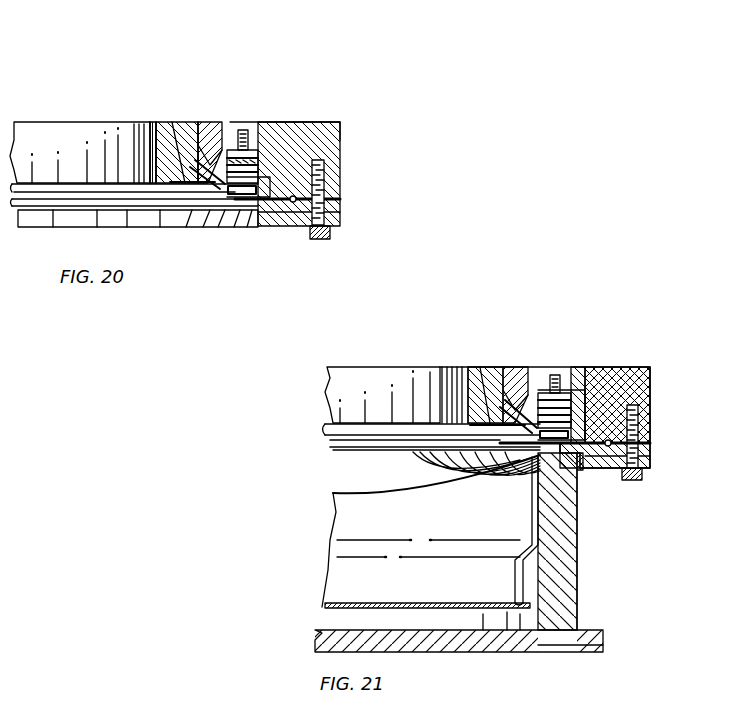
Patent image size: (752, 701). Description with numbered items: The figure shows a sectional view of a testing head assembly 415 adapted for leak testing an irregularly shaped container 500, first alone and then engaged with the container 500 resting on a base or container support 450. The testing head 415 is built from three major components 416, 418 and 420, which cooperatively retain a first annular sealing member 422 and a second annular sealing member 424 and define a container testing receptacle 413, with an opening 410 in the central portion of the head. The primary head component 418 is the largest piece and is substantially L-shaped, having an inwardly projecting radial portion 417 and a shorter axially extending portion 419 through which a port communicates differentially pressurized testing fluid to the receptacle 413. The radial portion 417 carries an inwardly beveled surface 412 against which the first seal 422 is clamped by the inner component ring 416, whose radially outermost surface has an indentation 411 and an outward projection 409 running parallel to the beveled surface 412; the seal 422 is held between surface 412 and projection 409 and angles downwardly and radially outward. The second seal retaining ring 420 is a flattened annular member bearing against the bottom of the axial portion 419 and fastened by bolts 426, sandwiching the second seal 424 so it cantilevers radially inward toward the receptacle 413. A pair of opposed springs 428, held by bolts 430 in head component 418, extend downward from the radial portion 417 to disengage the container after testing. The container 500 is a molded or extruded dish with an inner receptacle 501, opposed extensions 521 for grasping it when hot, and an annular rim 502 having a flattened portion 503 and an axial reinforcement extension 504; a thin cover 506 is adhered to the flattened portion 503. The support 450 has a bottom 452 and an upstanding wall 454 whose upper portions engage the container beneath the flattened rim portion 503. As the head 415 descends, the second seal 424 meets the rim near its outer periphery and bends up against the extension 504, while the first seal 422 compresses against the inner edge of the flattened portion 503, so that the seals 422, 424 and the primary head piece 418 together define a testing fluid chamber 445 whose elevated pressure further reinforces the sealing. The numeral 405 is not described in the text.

In FIG. 20, the housing block 405 is at (298, 121).
In FIG. 20, the outward projection 409 is at (152, 177).
In FIG. 21, the outward projection 409 is at (450, 367).
In FIG. 20, the opening 410 is at (43, 135).
In FIG. 21, the opening 410 is at (353, 375).
In FIG. 20, the indentation 411 is at (190, 188).
In FIG. 21, the indentation 411 is at (500, 390).
In FIG. 20, the inwardly beveled surface 412 is at (226, 122).
In FIG. 21, the inwardly beveled surface 412 is at (601, 303).
In FIG. 20, the container testing receptacle 413 is at (45, 207).
In FIG. 21, the container testing receptacle 413 is at (325, 432).
In FIG. 20, the testing head assembly 415 is at (253, 74).
In FIG. 21, the testing head assembly 415 is at (601, 302).
In FIG. 20, the inner component ring 416 is at (178, 123).
In FIG. 21, the inner component ring 416 is at (448, 392).
In FIG. 20, the inwardly projecting radial portion 417 is at (279, 86).
In FIG. 21, the inwardly projecting radial portion 417 is at (525, 368).
In FIG. 20, the primary head component 418 is at (342, 122).
In FIG. 21, the primary head component 418 is at (593, 368).
In FIG. 20, the axially extending portion 419 is at (333, 183).
In FIG. 21, the axially extending portion 419 is at (641, 443).
In FIG. 20, the second seal retaining ring 420 is at (343, 204).
In FIG. 21, the second seal retaining ring 420 is at (652, 458).
In FIG. 20, the first annular sealing member 422 is at (192, 195).
In FIG. 21, the first annular sealing member 422 is at (497, 452).
In FIG. 20, the second annular sealing member 424 is at (282, 228).
In FIG. 21, the second annular sealing member 424 is at (645, 414).
In FIG. 20, the bolts 426 is at (328, 240).
In FIG. 21, the bolts 426 is at (645, 478).
In FIG. 20, the springs 428 is at (254, 212).
In FIG. 21, the springs 428 is at (577, 428).
In FIG. 20, the bolts 430 is at (252, 128).
In FIG. 21, the bolts 430 is at (543, 367).
In FIG. 21, the testing fluid chamber 445 is at (650, 393).
In FIG. 21, the container support 450 is at (578, 553).
In FIG. 21, the bottom 452 is at (548, 640).
In FIG. 21, the wall 454 is at (578, 602).
In FIG. 21, the container 500 is at (338, 614).
In FIG. 21, the inner receptacle 501 is at (455, 588).
In FIG. 21, the annular rim 502 is at (533, 455).
In FIG. 21, the flattened portion 503 is at (650, 368).
In FIG. 21, the axial reinforcement extension 504 is at (580, 473).
In FIG. 21, the cover 506 is at (358, 493).
In FIG. 21, the opposed extensions 521 is at (598, 479).